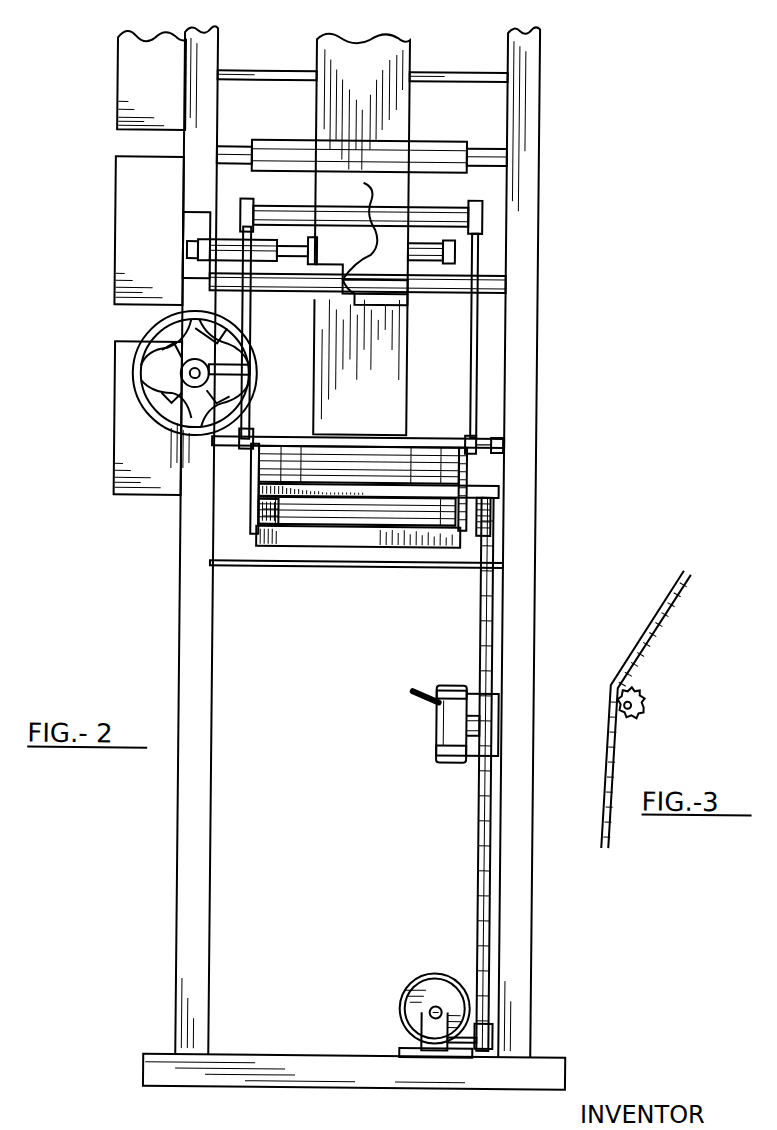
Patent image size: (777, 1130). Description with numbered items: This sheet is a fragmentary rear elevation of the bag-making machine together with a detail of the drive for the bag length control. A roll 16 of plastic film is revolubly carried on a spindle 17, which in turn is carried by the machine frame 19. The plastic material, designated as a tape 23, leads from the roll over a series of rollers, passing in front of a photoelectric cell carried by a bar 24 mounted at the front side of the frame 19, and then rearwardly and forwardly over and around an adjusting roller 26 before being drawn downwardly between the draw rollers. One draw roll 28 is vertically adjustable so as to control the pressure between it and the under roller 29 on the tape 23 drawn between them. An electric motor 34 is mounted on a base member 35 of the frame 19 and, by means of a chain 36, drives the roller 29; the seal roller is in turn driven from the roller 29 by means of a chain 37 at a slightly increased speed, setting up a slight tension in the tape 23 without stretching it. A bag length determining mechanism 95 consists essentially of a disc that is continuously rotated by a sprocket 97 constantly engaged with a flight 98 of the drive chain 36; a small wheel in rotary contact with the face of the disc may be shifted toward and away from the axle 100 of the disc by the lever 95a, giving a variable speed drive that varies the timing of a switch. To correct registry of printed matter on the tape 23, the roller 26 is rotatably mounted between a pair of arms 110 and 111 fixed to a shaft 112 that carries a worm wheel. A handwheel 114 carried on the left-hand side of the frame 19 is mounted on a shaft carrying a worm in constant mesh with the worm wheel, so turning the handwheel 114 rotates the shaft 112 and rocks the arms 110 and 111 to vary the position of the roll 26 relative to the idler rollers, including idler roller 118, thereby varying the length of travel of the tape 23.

In FIG. 2, the roll of plastic film 16 is at (404, 295).
In FIG. 2, the spindle 17 is at (437, 248).
In FIG. 2, the machine frame 19 is at (181, 634).
In FIG. 2, the tape 23 is at (388, 58).
In FIG. 2, the bar 24 is at (427, 77).
In FIG. 2, the adjusting roller 26 is at (429, 213).
In FIG. 2, the draw roll 28 is at (417, 462).
In FIG. 2, the under roller 29 is at (388, 510).
In FIG. 2, the electric motor 34 is at (436, 980).
In FIG. 2, the base member 35 is at (392, 1067).
In FIG. 2, the drive chain 36 is at (481, 860).
In FIG. 2, the chain 37 is at (268, 528).
In FIG. 2, the bag length determining mechanism 95 is at (442, 722).
In FIG. 2, the lever 95a is at (419, 693).
In FIG. 3, the sprocket 97 is at (652, 700).
In FIG. 3, the flight of the drive chain 98 is at (660, 643).
In FIG. 3, the axle 100 is at (632, 710).
In FIG. 2, the arm 110 is at (246, 294).
In FIG. 2, the arm 111 is at (475, 345).
In FIG. 2, the shaft 112 is at (291, 442).
In FIG. 2, the handwheel 114 is at (141, 397).
In FIG. 2, the idler roller 118 is at (467, 290).